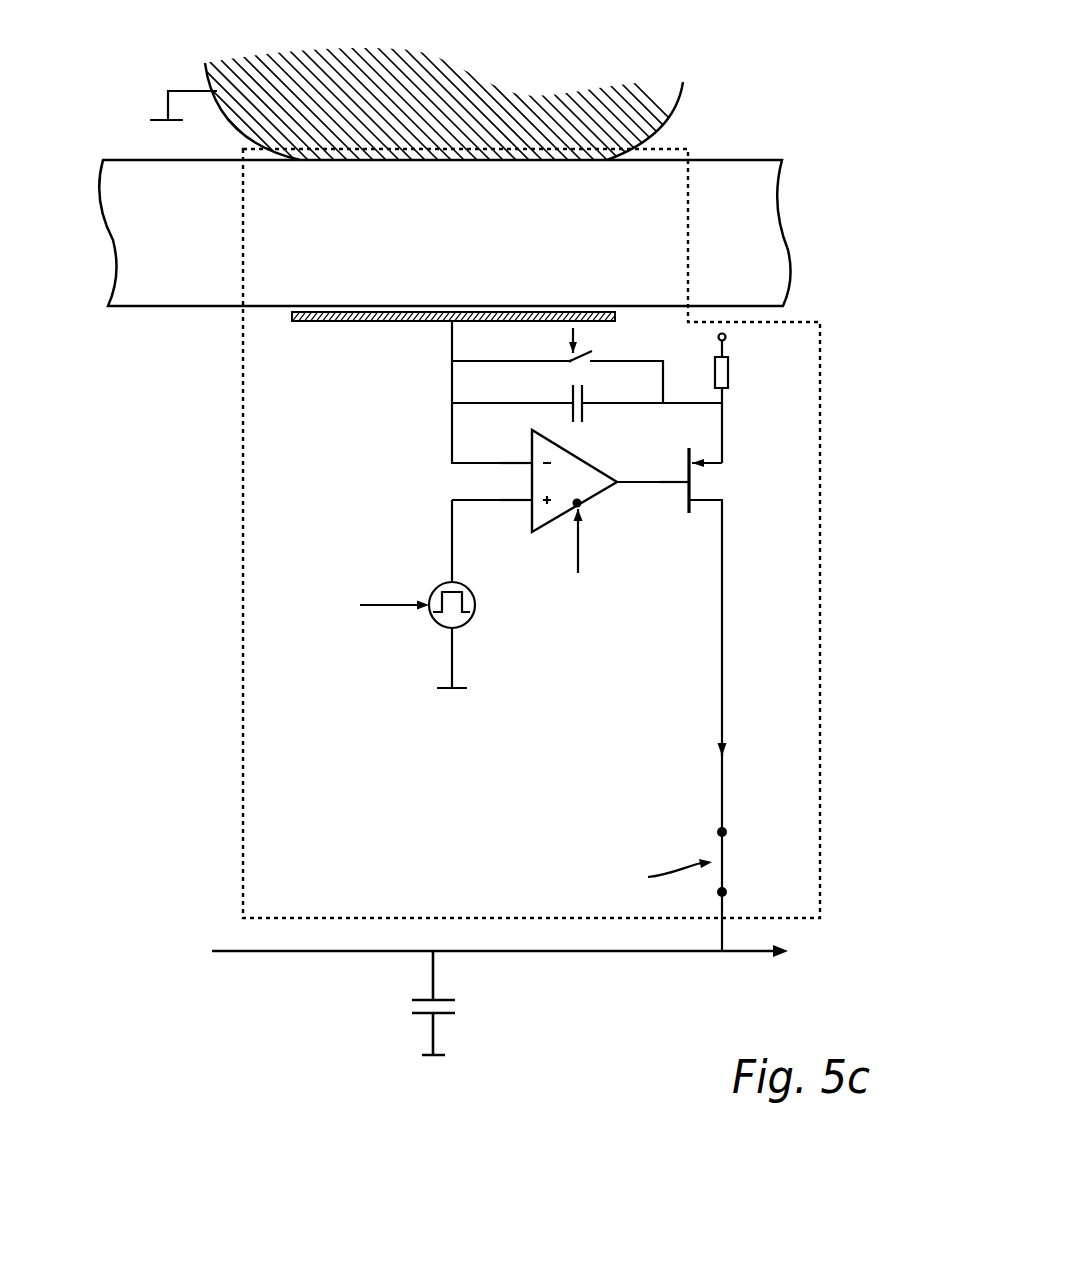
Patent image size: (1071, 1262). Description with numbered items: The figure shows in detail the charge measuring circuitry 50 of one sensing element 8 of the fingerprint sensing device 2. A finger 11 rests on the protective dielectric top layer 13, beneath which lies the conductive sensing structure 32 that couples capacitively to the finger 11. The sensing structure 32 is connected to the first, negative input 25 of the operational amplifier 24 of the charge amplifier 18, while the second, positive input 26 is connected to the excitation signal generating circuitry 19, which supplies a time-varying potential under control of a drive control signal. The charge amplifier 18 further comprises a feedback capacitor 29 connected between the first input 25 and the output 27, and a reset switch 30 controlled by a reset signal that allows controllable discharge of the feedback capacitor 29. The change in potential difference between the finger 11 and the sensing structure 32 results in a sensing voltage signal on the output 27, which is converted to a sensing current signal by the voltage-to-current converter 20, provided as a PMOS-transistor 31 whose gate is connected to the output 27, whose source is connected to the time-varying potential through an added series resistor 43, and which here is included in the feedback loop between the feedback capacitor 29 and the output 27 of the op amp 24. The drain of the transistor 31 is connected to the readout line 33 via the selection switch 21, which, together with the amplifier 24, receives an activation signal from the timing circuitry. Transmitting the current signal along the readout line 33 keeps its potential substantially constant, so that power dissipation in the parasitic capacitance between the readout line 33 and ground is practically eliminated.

The fingerprint sensing device 2 is at (792, 110).
The sensing element 8 is at (260, 628).
The finger 11 is at (518, 115).
The protective dielectric top layer 13 is at (137, 237).
The charge amplifier 18 is at (412, 488).
The excitation signal generating circuitry 19 is at (470, 620).
The voltage-to-current converter 20 is at (735, 455).
The selection switch 21 is at (736, 849).
The operational amplifier 24 is at (543, 532).
The first input 25 is at (528, 460).
The second input 26 is at (528, 503).
The output 27 is at (618, 483).
The feedback capacitor 29 is at (584, 415).
The reset switch 30 is at (570, 357).
The PMOS-transistor 31 is at (695, 483).
The sensing structure electrode 32 is at (362, 323).
The readout line 33 is at (742, 953).
The series resistor 43 is at (728, 370).
The charge measuring circuitry 50 is at (593, 688).